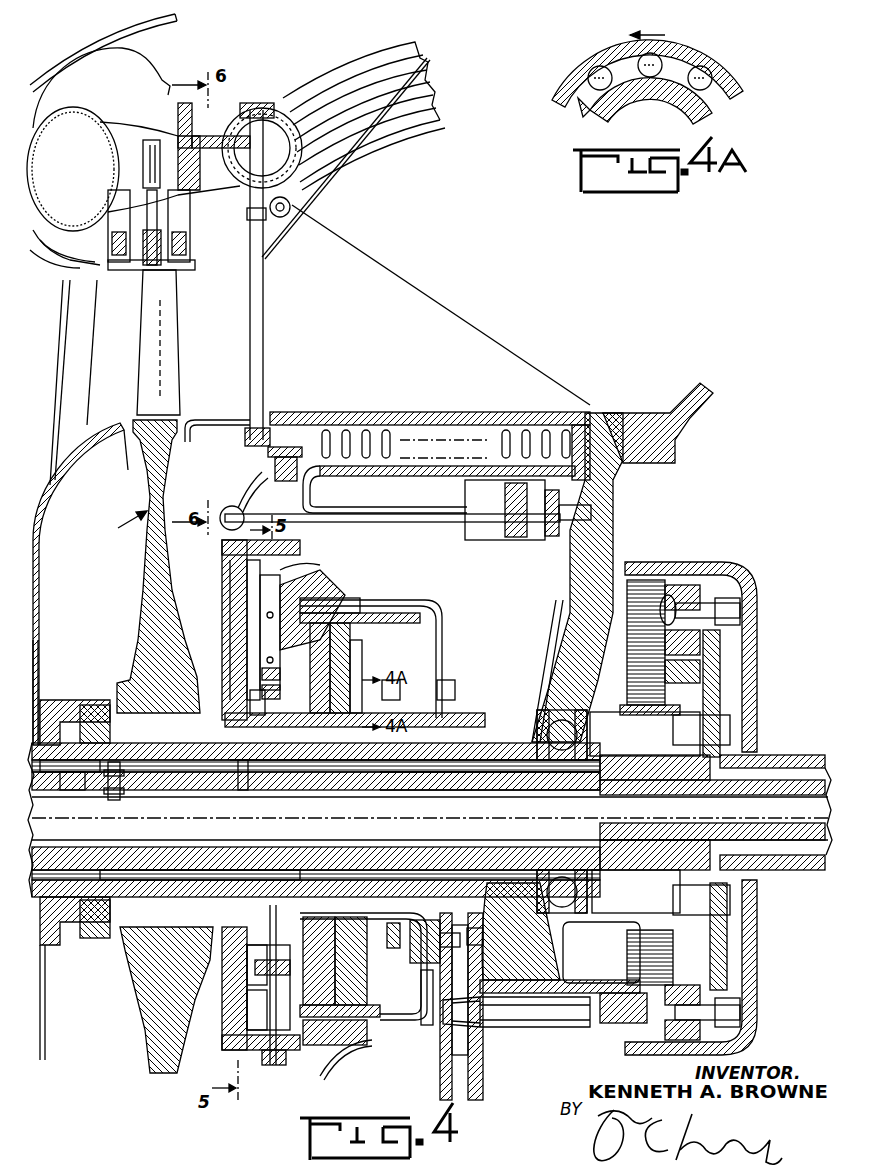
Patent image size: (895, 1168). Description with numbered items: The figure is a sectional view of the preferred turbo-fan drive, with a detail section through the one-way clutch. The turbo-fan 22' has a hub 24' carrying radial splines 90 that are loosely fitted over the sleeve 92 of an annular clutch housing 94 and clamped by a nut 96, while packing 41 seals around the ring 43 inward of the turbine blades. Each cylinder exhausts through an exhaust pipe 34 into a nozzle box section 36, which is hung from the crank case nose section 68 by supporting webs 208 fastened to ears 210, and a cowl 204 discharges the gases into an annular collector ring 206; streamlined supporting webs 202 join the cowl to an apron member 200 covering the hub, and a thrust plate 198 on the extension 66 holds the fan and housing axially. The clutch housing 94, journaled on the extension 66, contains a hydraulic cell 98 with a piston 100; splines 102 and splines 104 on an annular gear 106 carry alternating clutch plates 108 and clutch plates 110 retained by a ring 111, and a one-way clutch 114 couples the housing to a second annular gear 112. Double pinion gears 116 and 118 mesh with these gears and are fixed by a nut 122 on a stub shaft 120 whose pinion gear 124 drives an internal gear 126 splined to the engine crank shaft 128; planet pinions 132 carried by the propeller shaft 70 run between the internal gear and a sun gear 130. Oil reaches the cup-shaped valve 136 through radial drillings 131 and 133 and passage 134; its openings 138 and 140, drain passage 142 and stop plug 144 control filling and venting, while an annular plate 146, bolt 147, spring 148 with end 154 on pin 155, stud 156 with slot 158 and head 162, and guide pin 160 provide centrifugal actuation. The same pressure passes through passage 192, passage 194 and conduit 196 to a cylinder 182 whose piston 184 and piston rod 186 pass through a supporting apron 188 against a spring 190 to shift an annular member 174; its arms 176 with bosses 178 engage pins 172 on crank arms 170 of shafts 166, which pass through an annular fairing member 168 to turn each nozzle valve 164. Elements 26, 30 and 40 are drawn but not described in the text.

In FIG. 4, the turbo-fan 22' is at (117, 523).
In FIG. 4, the turbo-fan hub 24' is at (156, 746).
In FIG. 4, the stator vane 26 is at (170, 365).
In FIG. 4, the control rod 30 is at (143, 158).
In FIG. 4, the exhaust pipe 34 is at (430, 125).
In FIG. 4, the nozzle box section 36 is at (300, 105).
In FIG. 4, the inner casing wall 40 is at (385, 160).
In FIG. 4, the packing 41 is at (118, 270).
In FIG. 4, the ring 43 is at (168, 280).
In FIG. 4, the extension 66 is at (82, 790).
In FIG. 4, the crank case nose section 68 is at (575, 645).
In FIG. 4, the propeller shaft 70 is at (676, 762).
In FIG. 4, the splines 90 is at (250, 700).
In FIG. 4A, the sleeve 92 is at (655, 102).
In FIG. 4, the sleeve 92 is at (118, 800).
In FIG. 4, the clutch housing 94 is at (222, 598).
In FIG. 4, the nut 96 is at (100, 700).
In FIG. 4, the hydraulic cell 98 is at (262, 635).
In FIG. 4, the piston 100 is at (350, 575).
In FIG. 4, the splines 102 is at (365, 668).
In FIG. 4, the splines 104 is at (370, 605).
In FIG. 4, the annular gear 106 is at (425, 615).
In FIG. 4, the clutch plates 108 is at (350, 655).
In FIG. 4, the clutch plates 110 is at (350, 640).
In FIG. 4, the ring 111 is at (393, 780).
In FIG. 4A, the second annular gear 112 is at (608, 55).
In FIG. 4, the second annular gear 112 is at (450, 678).
In FIG. 4A, the one-way clutch 114 is at (680, 45).
In FIG. 4, the one-way clutch 114 is at (400, 675).
In FIG. 4, the gear 116 is at (446, 1087).
In FIG. 4, the gear 118 is at (483, 1087).
In FIG. 4, the stub shaft 120 is at (548, 1040).
In FIG. 4, the nut 122 is at (420, 1050).
In FIG. 4, the pinion gear 124 is at (645, 978).
In FIG. 4, the internal gear 126 is at (757, 595).
In FIG. 4, the engine crank shaft 128 is at (595, 805).
In FIG. 4, the sun gear 130 is at (600, 735).
In FIG. 4, the radial drilling 131 is at (114, 805).
In FIG. 4, the planet pinions 132 is at (695, 580).
In FIG. 4, the radial drilling 133 is at (100, 800).
In FIG. 4, the passage 134 is at (222, 570).
In FIG. 4, the valve 136 is at (300, 566).
In FIG. 4, the valve openings 138 is at (247, 605).
In FIG. 4, the valve openings 140 is at (290, 668).
In FIG. 4, the drain passage 142 is at (300, 580).
In FIG. 4, the stop plug 144 is at (300, 552).
In FIG. 4, the annular plate 146 is at (285, 687).
In FIG. 4, the bolt 147 is at (238, 790).
In FIG. 4, the spring 148 is at (240, 995).
In FIG. 4, the spring end 154 is at (266, 660).
In FIG. 4, the pin 155 is at (266, 625).
In FIG. 4, the stud 156 is at (268, 1000).
In FIG. 4, the slot 158 is at (240, 1015).
In FIG. 4, the guide pin 160 is at (272, 1080).
In FIG. 4, the head 162 is at (290, 948).
In FIG. 4, the valve 164 is at (245, 205).
In FIG. 4, the shaft 166 is at (250, 322).
In FIG. 4, the annular fairing member 168 is at (240, 420).
In FIG. 4, the crank arm 170 is at (268, 450).
In FIG. 4, the pin 172 is at (290, 481).
In FIG. 4, the annular member 174 is at (226, 505).
In FIG. 4, the arms 176 is at (250, 482).
In FIG. 4, the boss 178 is at (322, 480).
In FIG. 4, the cylinder 182 is at (465, 530).
In FIG. 4, the piston 184 is at (520, 540).
In FIG. 4, the piston rod 186 is at (345, 522).
In FIG. 4, the supporting apron 188 is at (390, 478).
In FIG. 4, the spring 190 is at (355, 420).
In FIG. 4, the passage 192 is at (292, 775).
In FIG. 4, the passage 194 is at (465, 792).
In FIG. 4, the conduit 196 is at (530, 625).
In FIG. 4, the thrust plate 198 is at (60, 690).
In FIG. 4, the apron member 200 is at (50, 485).
In FIG. 4, the supporting webs 202 is at (82, 370).
In FIG. 4, the cowl 204 is at (103, 48).
In FIG. 4, the annular collector ring 206 is at (150, 95).
In FIG. 4, the supporting webs 208 is at (430, 295).
In FIG. 4, the ears 210 is at (290, 200).